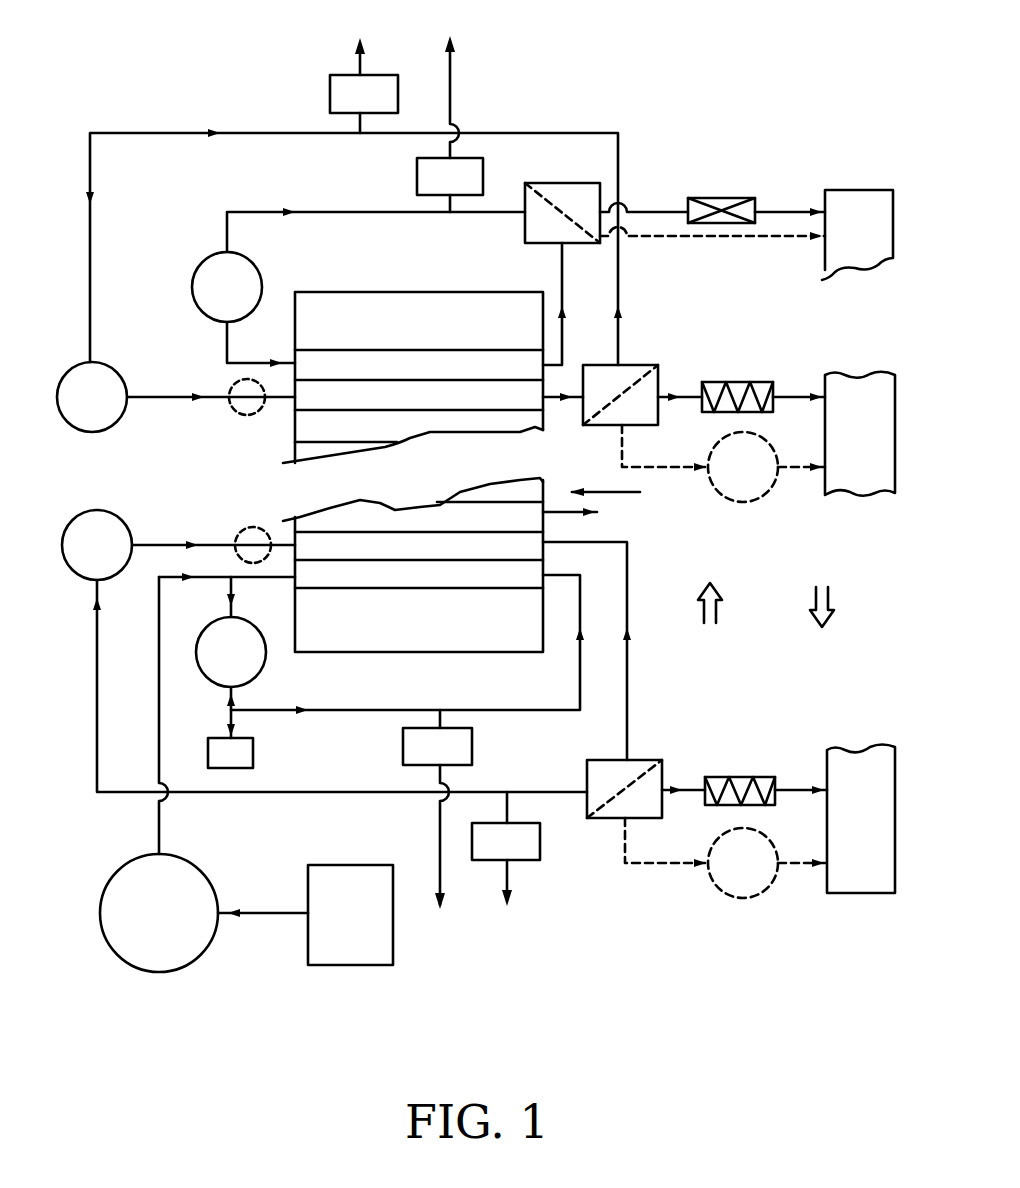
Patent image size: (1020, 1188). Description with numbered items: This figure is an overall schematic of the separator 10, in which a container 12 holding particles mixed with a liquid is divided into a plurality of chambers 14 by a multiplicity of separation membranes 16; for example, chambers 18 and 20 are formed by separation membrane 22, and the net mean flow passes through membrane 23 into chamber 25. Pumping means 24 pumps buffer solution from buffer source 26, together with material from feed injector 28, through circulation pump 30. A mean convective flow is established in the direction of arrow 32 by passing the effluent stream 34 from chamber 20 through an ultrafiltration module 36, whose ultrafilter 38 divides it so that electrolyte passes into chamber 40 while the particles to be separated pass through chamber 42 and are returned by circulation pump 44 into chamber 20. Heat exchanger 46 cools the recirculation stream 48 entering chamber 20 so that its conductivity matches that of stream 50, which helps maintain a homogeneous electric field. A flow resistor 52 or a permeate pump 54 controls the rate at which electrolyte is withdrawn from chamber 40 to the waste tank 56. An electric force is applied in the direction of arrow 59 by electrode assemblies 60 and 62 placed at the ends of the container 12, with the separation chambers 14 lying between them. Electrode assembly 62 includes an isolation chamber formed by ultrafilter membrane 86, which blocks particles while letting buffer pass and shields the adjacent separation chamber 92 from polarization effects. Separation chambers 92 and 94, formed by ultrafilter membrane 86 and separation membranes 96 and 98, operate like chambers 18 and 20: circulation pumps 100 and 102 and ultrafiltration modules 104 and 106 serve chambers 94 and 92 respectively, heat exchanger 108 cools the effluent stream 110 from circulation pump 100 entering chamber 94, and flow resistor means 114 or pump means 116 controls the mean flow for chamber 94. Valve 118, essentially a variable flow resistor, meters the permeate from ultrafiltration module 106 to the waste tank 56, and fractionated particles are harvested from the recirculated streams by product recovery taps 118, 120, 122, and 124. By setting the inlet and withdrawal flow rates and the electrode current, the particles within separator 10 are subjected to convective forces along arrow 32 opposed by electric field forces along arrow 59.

The separator 10 is at (574, 72).
The container 12 is at (619, 493).
The chambers 14 is at (368, 444).
The separation membranes 16 is at (399, 499).
The chamber 18 is at (419, 589).
The chamber 20 is at (402, 582).
The separation membrane 22 is at (519, 624).
The membrane 23 is at (503, 484).
The pumping means 24 is at (177, 920).
The chamber 25 is at (419, 575).
The buffer source 26 is at (377, 926).
The feed injector 28 is at (260, 752).
The circulation pump 30 is at (254, 655).
The directional arrow 32 is at (739, 602).
The effluent stream 34 is at (615, 647).
The ultrafiltration module 36 is at (682, 726).
The ultrafilter 38 is at (655, 777).
The chamber 40 is at (666, 832).
The chamber 42 is at (595, 788).
The circulation pump 44 is at (104, 567).
The heat exchanger 46 is at (241, 522).
The recirculation stream 48 is at (165, 518).
The stream 50 is at (269, 597).
The flow resistor 52 is at (762, 756).
The permeate pump 54 is at (722, 888).
The waste tank 56 is at (856, 851).
The arrow 59 is at (853, 599).
The electrode assembly 60 is at (419, 584).
The electrode assembly 62 is at (419, 357).
The ultrafilter membrane 86 is at (419, 313).
The separation chamber 92 is at (404, 430).
The separation chamber 94 is at (458, 431).
The separation membrane 96 is at (346, 452).
The separation membrane 98 is at (291, 351).
The circulation pump 100 is at (97, 423).
The circulation pump 102 is at (190, 269).
The ultrafiltration module 104 is at (639, 370).
The ultrafiltration module 106 is at (551, 193).
The heat exchanger 108 is at (198, 366).
The effluent stream 110 is at (211, 415).
The flow resistor means 114 is at (751, 368).
The pump means 116 is at (767, 490).
The valve 118 is at (558, 459).
The product recovery tap 120 is at (528, 860).
The product recovery tap 122 is at (409, 172).
The product recovery tap 124 is at (317, 89).